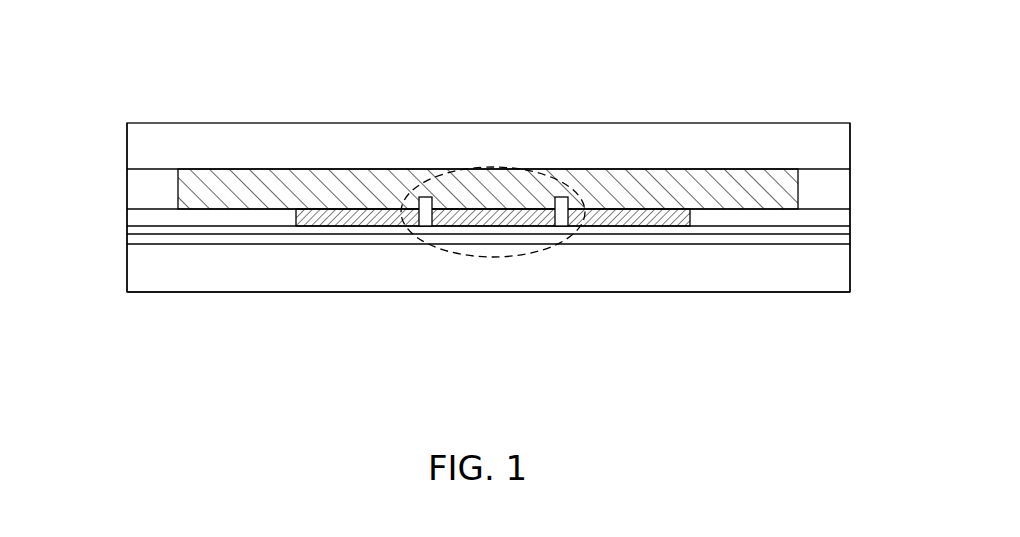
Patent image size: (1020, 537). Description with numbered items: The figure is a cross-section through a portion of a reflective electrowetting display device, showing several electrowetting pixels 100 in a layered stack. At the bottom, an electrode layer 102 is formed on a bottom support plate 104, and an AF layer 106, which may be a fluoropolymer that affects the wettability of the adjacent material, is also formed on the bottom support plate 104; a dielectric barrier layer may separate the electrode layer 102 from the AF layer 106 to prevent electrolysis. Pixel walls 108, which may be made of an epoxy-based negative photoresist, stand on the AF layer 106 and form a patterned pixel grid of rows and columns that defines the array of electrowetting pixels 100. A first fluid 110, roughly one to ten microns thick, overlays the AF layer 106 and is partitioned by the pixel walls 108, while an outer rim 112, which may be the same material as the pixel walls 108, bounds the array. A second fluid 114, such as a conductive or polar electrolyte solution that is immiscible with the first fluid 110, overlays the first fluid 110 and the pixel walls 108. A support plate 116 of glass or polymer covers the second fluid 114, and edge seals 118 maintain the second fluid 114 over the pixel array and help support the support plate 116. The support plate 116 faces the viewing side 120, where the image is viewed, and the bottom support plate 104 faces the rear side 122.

The electrowetting pixel 100 is at (510, 257).
The electrode layer 102 is at (126, 242).
The bottom support plate 104 is at (207, 276).
The AF layer 106 is at (126, 231).
The pixel walls 108 is at (426, 227).
The first fluid 110 is at (613, 226).
The outer rim 112 is at (125, 218).
The second fluid 114 is at (703, 169).
The support plate 116 is at (207, 154).
The edge seals 118 is at (852, 186).
The viewing side 120 is at (597, 40).
The rear side 122 is at (258, 328).